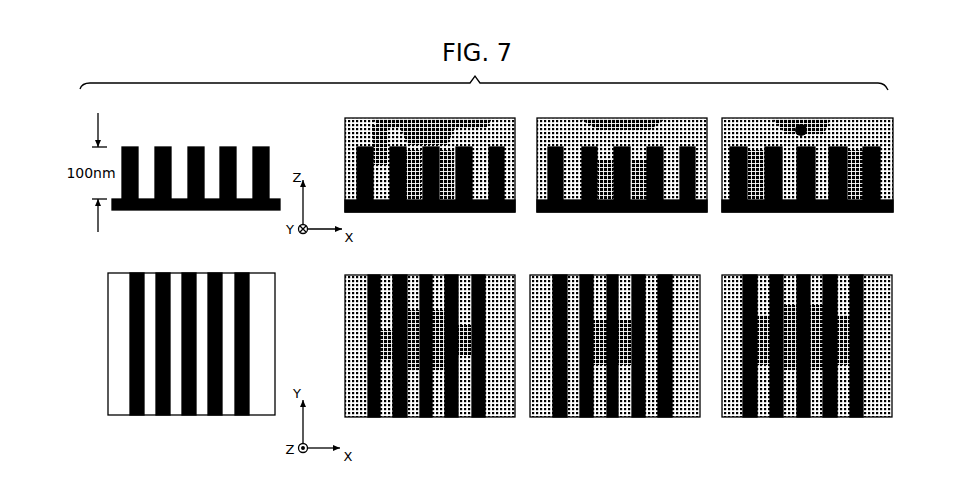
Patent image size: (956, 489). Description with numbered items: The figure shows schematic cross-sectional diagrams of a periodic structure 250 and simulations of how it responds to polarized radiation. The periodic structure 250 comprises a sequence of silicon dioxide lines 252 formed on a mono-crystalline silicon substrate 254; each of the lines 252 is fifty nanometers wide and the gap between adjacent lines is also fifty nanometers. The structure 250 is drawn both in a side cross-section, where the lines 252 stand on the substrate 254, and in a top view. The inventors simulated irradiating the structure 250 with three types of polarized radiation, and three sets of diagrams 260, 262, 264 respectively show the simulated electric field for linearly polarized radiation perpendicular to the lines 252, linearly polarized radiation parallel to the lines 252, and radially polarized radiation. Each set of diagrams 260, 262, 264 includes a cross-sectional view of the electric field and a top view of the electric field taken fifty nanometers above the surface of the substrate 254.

The periodic structure 250 is at (98, 282).
The silicon dioxide lines 252 is at (132, 147).
The mono-crystalline silicon substrate 254 is at (184, 210).
The set of diagrams 260 is at (468, 427).
The set of diagrams 262 is at (655, 427).
The set of diagrams 264 is at (835, 427).